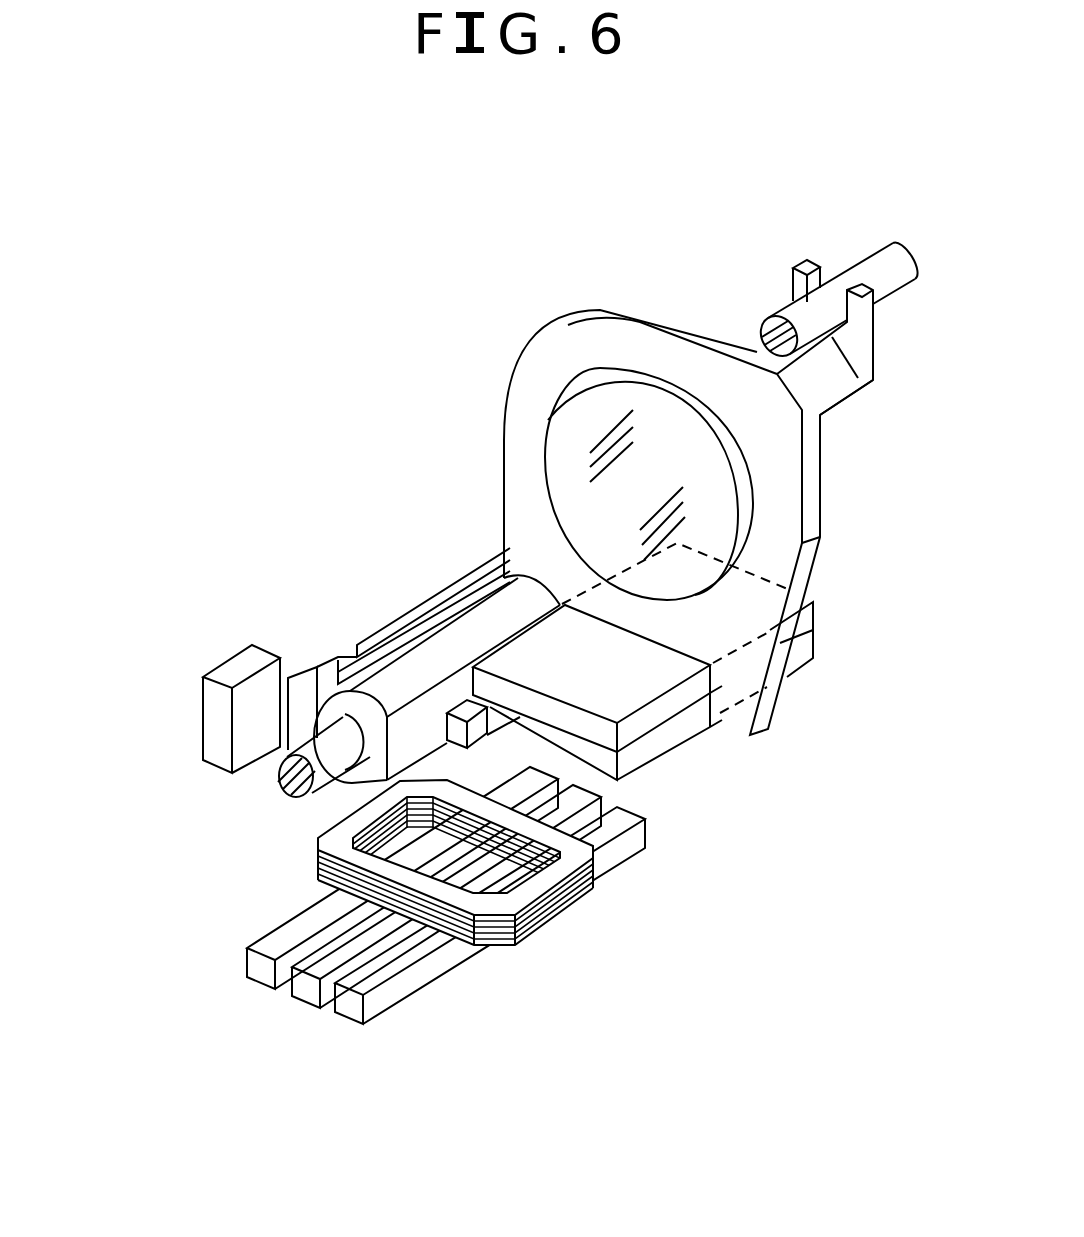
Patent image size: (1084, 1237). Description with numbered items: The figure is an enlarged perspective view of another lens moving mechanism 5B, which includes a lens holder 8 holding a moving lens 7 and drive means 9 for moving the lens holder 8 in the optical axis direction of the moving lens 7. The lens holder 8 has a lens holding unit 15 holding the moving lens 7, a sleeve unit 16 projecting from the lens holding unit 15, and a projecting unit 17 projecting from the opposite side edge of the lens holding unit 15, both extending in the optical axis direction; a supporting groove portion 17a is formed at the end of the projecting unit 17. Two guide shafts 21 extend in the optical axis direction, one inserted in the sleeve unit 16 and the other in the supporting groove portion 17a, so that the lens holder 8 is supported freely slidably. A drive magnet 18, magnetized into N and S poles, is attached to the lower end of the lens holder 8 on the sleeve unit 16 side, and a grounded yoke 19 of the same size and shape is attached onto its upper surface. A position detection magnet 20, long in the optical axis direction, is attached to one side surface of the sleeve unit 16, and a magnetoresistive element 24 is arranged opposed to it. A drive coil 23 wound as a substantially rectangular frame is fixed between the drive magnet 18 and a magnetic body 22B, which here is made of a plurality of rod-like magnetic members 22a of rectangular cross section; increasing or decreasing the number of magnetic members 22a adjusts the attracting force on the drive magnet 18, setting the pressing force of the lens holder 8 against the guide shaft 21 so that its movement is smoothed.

The lens moving mechanism 5B is at (478, 300).
The moving lens 7 is at (609, 410).
The lens holder 8 is at (775, 504).
The drive means 9 is at (705, 839).
The lens holding unit 15 is at (524, 404).
The sleeve unit 16 is at (423, 653).
The projecting unit 17 is at (822, 377).
The supporting groove portion 17a is at (812, 258).
The drive magnet 18 is at (690, 725).
The grounded yoke 19 is at (655, 718).
The position detection magnet 20 is at (357, 645).
The guide shaft 21 is at (888, 273).
The magnetic body 22B is at (133, 1015).
The magnetic member 22a is at (263, 970).
The drive coil 23 is at (340, 850).
The magnetoresistive element 24 is at (230, 670).